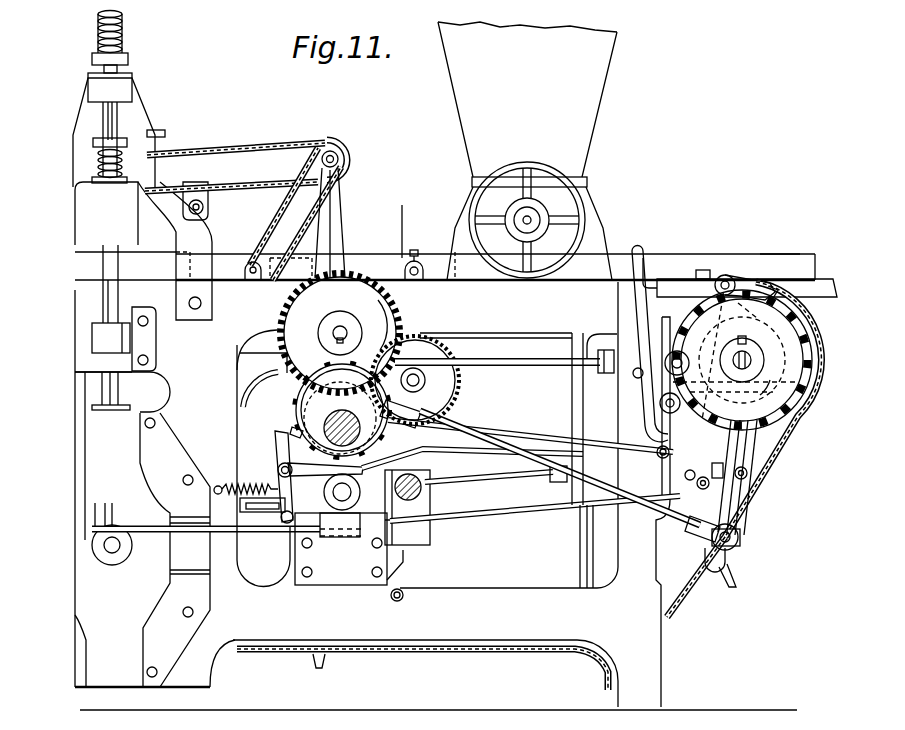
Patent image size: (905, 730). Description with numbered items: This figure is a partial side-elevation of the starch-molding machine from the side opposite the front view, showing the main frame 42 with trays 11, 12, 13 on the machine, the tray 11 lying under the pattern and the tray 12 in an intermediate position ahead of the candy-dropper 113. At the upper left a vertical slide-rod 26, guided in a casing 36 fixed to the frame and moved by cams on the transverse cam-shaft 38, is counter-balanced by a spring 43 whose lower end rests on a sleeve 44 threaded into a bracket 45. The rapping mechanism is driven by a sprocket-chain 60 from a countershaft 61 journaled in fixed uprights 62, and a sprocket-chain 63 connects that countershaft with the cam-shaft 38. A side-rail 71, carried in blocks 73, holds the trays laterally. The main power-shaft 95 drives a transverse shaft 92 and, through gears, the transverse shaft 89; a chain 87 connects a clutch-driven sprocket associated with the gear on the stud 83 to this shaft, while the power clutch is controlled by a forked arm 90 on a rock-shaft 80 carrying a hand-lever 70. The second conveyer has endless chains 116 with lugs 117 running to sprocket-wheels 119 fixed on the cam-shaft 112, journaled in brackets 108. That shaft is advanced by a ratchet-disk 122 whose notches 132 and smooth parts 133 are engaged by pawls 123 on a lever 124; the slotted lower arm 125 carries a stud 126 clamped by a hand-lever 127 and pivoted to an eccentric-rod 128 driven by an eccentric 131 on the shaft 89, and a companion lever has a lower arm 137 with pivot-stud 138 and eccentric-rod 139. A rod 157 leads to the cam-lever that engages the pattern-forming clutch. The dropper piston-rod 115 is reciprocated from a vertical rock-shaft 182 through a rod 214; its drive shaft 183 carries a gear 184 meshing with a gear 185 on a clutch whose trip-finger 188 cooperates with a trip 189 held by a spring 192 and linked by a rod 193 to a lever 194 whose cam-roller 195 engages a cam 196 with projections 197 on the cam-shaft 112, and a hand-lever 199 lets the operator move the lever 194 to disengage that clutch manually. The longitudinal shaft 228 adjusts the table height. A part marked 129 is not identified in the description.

The tray 11 is at (150, 257).
The tray 12 is at (375, 255).
The tray 13 is at (622, 260).
The slide-rods 26 is at (120, 122).
The casing 36 is at (142, 550).
The cam-shaft 38 is at (112, 552).
The main frame 42 is at (450, 494).
The counter-balancing spring 43 is at (126, 30).
The sleeve 44 is at (129, 60).
The bracket 45 is at (134, 101).
The sprocket-chain 60 is at (253, 151).
The countershaft 61 is at (341, 156).
The uprights 62 is at (334, 219).
The sprocket-chain 63 is at (271, 222).
The hand-lever 70 is at (86, 436).
The side-rail 71 is at (427, 261).
The blocks 73 is at (404, 220).
The rock-shaft 80 is at (226, 540).
The stud 83 is at (426, 379).
The chain 87 is at (446, 343).
The transverse shaft 89 is at (357, 474).
The forked arm 90 is at (431, 527).
The transverse shaft 92 is at (333, 493).
The main power-shaft 95 is at (419, 477).
The bracket 108 is at (684, 488).
The cam-shaft 112 is at (735, 357).
The candy-dropper 113 is at (527, 151).
The piston-rod 115 is at (522, 217).
The endless chains 116 is at (676, 616).
The lugs 117 is at (568, 656).
The sprocket-wheels 119 is at (816, 403).
The ratchet-disk 122 is at (742, 360).
The pawls 123 is at (740, 280).
The lever 124 is at (781, 286).
The lower arm 125 is at (704, 558).
The stud 126 is at (741, 545).
The hand-lever 127 is at (732, 588).
The eccentric-rod 128 is at (683, 524).
The chain 129 is at (292, 405).
The eccentric 131 is at (357, 410).
The notches 132 is at (812, 360).
The smooth peripheral parts 133 is at (707, 277).
The lower arm 137 is at (765, 488).
The pivot-stud 138 is at (748, 474).
The eccentric-rod 139 is at (549, 442).
The rod 157 is at (503, 511).
The rock-shaft 182 is at (571, 388).
The shaft 183 is at (343, 329).
The gear 184 is at (402, 310).
The gear 185 is at (452, 397).
The trip-finger 188 is at (292, 432).
The trip 189 is at (282, 446).
The spring 192 is at (243, 478).
The rod 193 is at (443, 453).
The lever 194 is at (652, 438).
The cam-roller 195 is at (666, 360).
The cam 196 is at (659, 398).
The projections 197 is at (657, 436).
The hand-lever 199 is at (634, 298).
The rod 214 is at (505, 478).
The shaft 228 is at (524, 362).